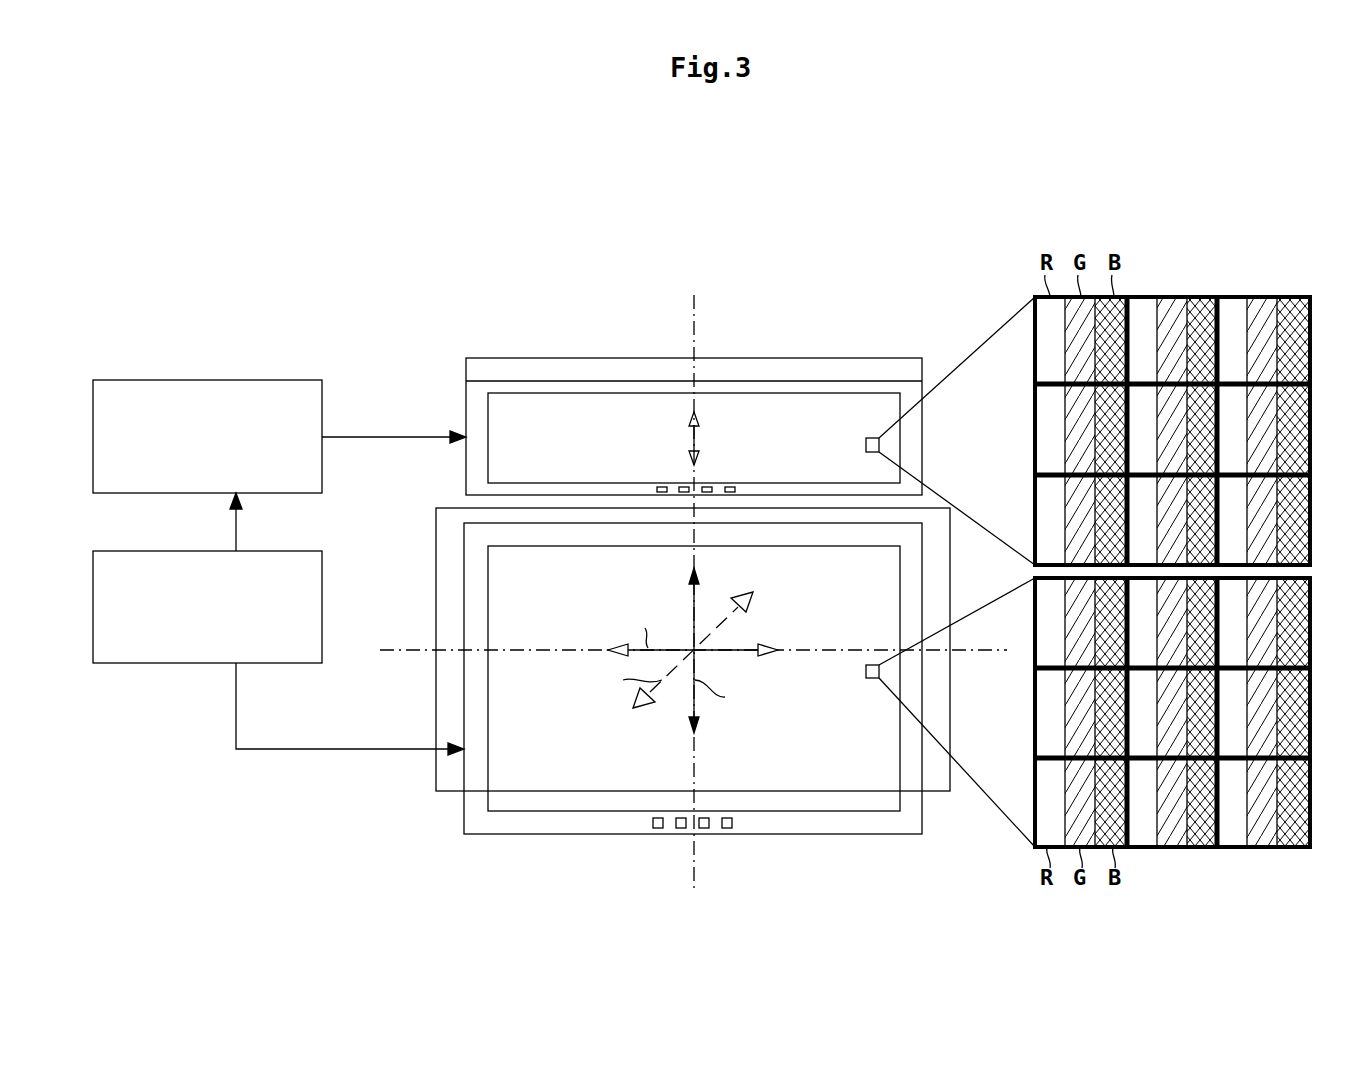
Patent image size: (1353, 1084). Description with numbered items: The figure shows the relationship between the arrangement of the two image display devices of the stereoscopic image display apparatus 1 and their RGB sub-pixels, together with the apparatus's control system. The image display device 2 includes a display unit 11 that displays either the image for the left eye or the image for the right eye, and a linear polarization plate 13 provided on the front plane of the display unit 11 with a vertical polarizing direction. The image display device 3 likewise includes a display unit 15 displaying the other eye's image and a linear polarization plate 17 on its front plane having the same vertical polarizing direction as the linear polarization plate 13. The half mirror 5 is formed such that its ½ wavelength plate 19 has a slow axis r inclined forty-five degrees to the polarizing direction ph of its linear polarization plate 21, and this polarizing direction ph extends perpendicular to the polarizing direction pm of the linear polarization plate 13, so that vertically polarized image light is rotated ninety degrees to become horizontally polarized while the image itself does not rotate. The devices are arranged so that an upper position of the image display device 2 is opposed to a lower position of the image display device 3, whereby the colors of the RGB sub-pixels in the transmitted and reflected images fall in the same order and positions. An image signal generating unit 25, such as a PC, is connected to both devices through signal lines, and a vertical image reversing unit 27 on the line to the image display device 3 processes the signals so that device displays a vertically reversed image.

The stereoscopic image display apparatus 1 is at (432, 863).
The image display device 2 is at (562, 834).
The image display device 3 is at (516, 358).
The half mirror 5 is at (628, 670).
The ½ wavelength plate 19 is at (693, 649).
The linear polarization plate 21 is at (436, 778).
The display unit 11 is at (783, 799).
The linear polarization plate 13 is at (761, 713).
The display unit 15 is at (793, 405).
The linear polarization plate 17 is at (761, 431).
The image signal generating unit 25 is at (287, 655).
The vertical image reversing unit 27 is at (287, 487).